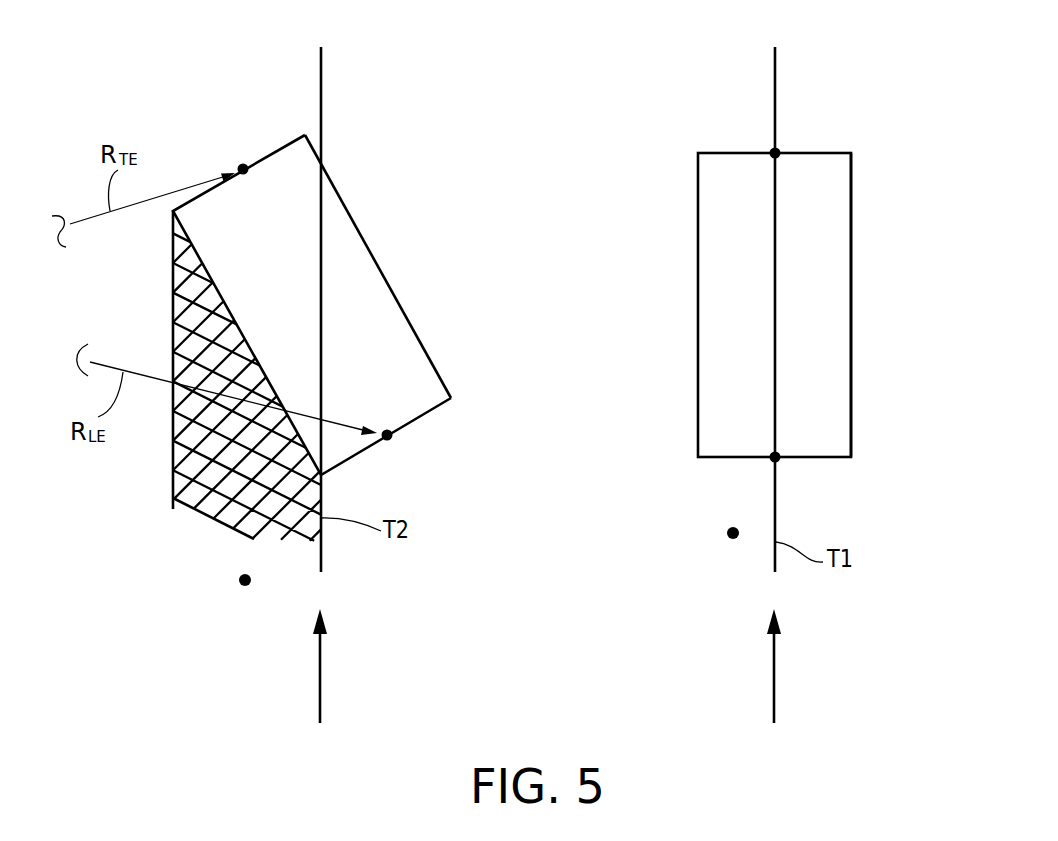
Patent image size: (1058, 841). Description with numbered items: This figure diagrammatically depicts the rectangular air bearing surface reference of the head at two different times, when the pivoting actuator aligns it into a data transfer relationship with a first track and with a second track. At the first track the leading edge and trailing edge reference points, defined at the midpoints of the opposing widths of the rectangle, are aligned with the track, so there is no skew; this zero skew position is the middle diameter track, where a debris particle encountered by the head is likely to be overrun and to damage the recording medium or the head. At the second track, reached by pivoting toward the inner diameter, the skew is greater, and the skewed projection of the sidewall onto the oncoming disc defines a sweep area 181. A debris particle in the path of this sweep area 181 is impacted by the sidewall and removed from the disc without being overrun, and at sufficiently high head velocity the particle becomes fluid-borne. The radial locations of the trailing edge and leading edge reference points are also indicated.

The sweep area 181 is at (212, 457).